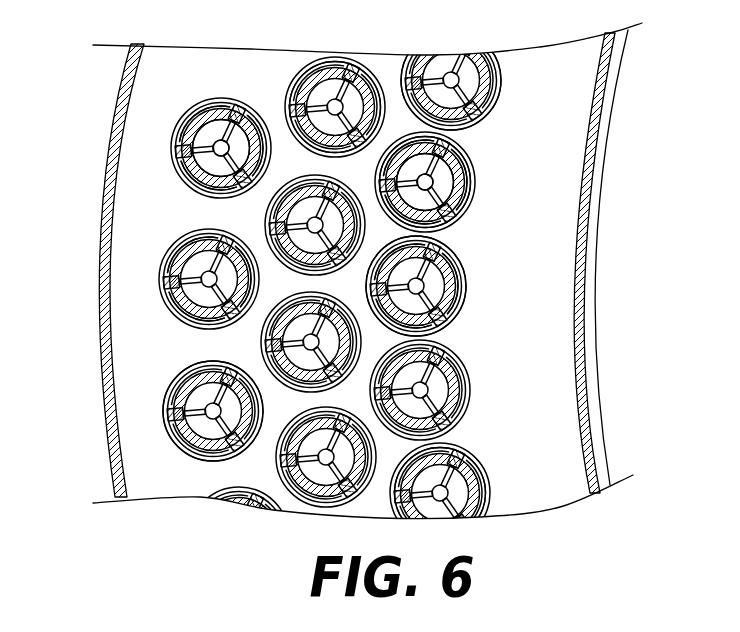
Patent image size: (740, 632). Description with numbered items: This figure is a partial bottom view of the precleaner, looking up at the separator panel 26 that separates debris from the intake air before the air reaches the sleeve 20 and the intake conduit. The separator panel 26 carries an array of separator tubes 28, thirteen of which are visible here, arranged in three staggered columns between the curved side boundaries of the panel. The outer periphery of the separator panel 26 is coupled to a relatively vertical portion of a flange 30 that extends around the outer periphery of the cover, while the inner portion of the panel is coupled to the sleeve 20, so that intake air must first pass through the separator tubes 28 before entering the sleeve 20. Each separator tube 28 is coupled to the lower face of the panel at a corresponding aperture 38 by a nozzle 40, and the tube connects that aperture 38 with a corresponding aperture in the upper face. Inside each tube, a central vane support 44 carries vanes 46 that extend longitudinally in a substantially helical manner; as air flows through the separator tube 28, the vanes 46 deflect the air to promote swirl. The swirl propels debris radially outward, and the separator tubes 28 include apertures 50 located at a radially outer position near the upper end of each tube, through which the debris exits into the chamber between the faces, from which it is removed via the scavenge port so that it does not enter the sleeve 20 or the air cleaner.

The sleeve 20 is at (598, 298).
The separator panel 26 is at (133, 154).
The separator tubes 28 is at (503, 66).
The flange 30 is at (98, 280).
The apertures 38 is at (492, 115).
The nozzle 40 is at (178, 172).
The vane support 44 is at (218, 136).
The vanes 46 is at (208, 138).
The apertures 50 is at (317, 72).